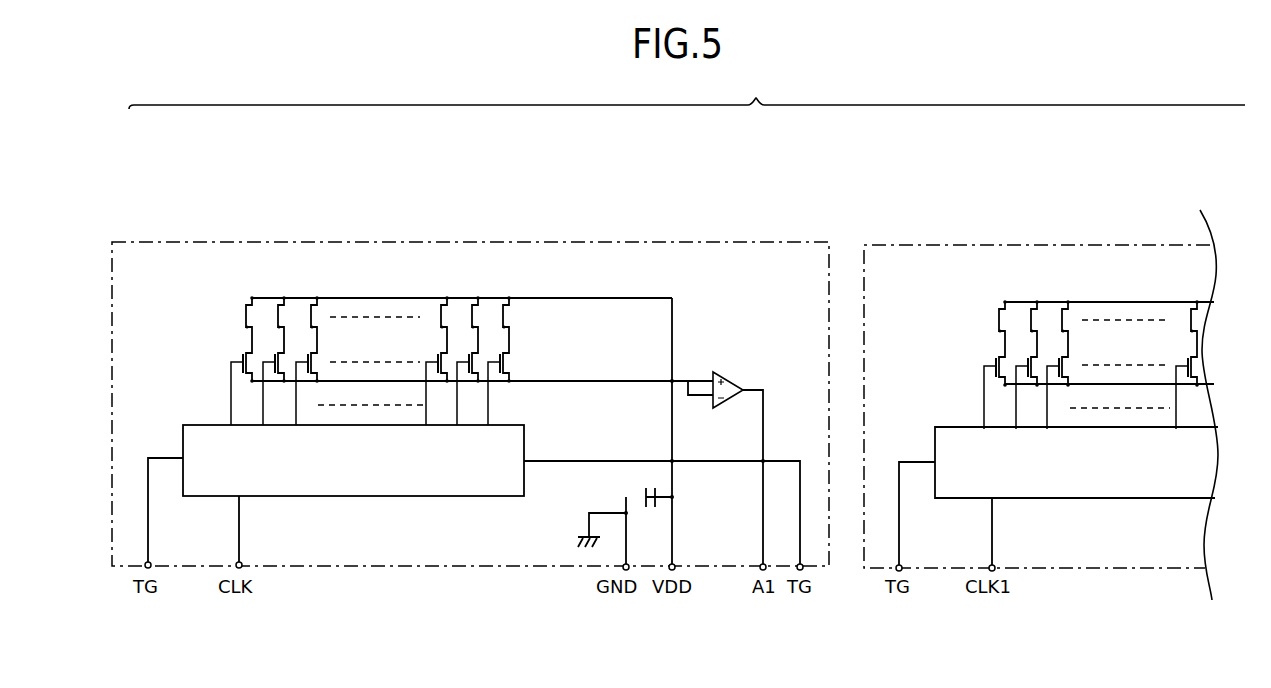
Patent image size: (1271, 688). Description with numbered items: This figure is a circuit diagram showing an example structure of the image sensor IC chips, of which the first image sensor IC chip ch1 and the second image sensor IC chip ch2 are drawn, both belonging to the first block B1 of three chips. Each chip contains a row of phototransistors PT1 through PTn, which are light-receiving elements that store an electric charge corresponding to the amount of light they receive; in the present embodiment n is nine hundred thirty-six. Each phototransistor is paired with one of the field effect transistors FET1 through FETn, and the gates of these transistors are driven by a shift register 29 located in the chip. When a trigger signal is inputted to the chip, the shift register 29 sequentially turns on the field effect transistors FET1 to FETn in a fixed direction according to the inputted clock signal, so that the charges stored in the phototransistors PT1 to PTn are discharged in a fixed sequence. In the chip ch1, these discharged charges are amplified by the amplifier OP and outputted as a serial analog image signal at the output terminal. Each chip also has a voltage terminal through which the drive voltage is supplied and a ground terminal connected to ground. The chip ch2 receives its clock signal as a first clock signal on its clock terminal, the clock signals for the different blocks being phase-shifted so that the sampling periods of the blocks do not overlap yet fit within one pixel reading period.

The shift register 29 is at (456, 473).
The block B1 is at (687, 93).
The image sensor IC chip ch1 is at (472, 242).
The image sensor IC chip ch2 is at (948, 245).
The phototransistor PT1 is at (243, 313).
The phototransistor PTn is at (510, 308).
The field effect transistor FET1 is at (240, 360).
The field effect transistor FETn is at (504, 357).
The amplifier OP is at (728, 374).